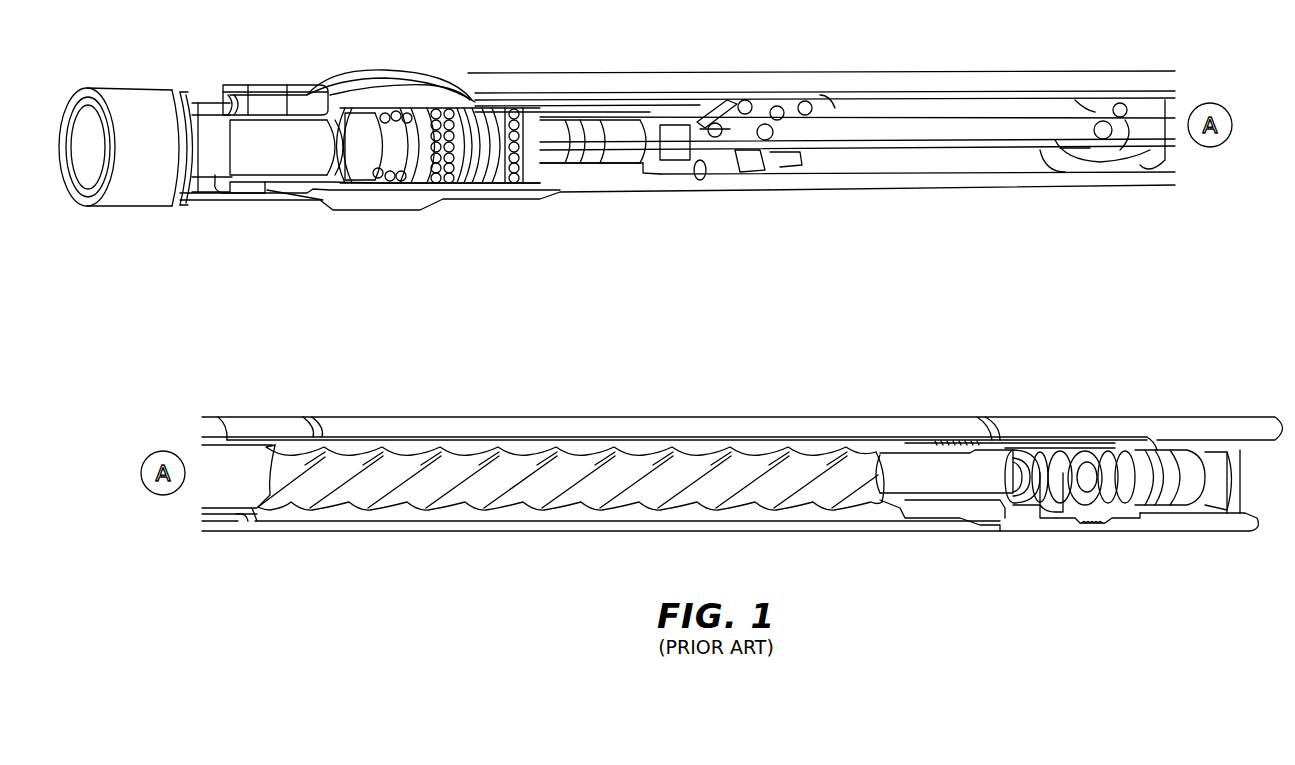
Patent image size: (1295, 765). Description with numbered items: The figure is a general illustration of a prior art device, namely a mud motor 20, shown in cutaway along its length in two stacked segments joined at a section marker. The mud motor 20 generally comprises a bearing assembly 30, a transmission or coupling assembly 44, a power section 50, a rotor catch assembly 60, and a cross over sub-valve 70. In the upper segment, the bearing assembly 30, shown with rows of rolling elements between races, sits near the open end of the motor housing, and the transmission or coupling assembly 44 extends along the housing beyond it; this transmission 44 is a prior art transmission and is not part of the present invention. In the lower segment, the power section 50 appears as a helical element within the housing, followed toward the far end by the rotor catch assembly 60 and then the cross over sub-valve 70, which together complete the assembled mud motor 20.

The mud motor 20 is at (181, 207).
The bearing assembly 30 is at (480, 162).
The transmission or coupling assembly 44 is at (982, 128).
The power section 50 is at (562, 472).
The rotor catch assembly 60 is at (1034, 450).
The cross over sub-valve 70 is at (1202, 467).